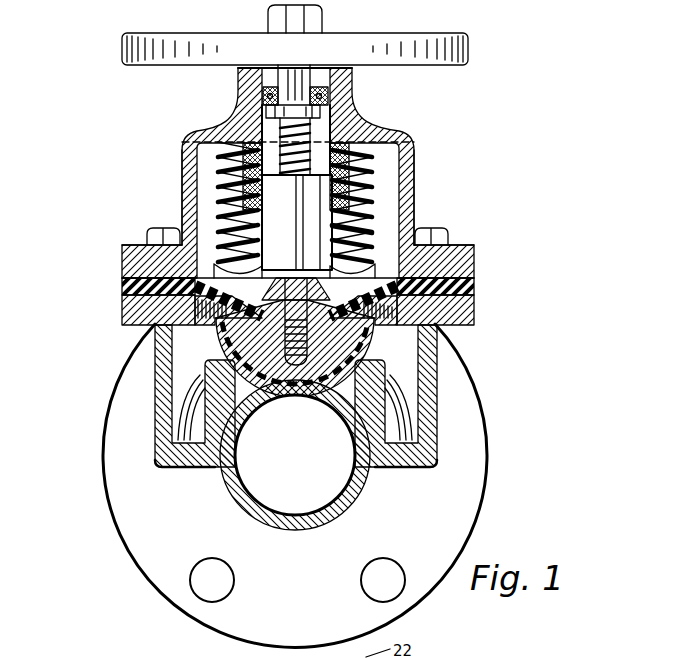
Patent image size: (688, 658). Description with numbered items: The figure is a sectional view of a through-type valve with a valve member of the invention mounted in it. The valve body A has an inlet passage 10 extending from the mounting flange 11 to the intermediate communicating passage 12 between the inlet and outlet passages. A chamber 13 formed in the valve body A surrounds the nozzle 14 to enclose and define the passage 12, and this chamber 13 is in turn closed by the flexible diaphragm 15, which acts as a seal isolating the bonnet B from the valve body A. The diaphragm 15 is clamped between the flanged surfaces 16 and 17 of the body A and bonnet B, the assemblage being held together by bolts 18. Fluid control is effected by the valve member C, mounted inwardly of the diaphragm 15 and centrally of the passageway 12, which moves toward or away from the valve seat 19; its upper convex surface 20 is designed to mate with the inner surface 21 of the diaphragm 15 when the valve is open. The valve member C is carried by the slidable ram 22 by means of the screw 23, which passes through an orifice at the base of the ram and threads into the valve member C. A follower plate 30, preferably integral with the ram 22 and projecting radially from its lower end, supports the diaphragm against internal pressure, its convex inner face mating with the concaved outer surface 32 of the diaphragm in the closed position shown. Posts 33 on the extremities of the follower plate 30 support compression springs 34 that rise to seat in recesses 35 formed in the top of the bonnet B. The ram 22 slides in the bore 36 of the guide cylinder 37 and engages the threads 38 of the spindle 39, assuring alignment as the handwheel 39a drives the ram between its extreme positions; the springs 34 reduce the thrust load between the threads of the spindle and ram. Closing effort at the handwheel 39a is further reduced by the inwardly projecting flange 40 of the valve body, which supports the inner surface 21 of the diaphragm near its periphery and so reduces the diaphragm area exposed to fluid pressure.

The inlet passage 10 is at (248, 468).
The mounting flange 11 is at (140, 533).
The intermediate communicating passage 12 is at (244, 398).
The chamber 13 is at (410, 375).
The nozzle 14 is at (220, 372).
The flexible diaphragm 15 is at (476, 287).
The flanged surface of body 16 is at (476, 313).
The flanged surface of bonnet 17 is at (476, 270).
The bolts 18 is at (160, 228).
The valve seat 19 is at (380, 372).
The upper convex surface 20 is at (232, 338).
The inner surface of diaphragm 21 is at (212, 325).
The slidable ram 22 is at (304, 202).
The screw 23 is at (297, 284).
The follower plate 30 is at (214, 284).
The concaved outer surface of diaphragm 32 is at (370, 284).
The posts 33 is at (355, 234).
The compression springs 34 is at (240, 178).
The recesses 35 is at (200, 122).
The bore 36 is at (262, 106).
The guide cylinder 37 is at (250, 163).
The threads 38 is at (332, 117).
The spindle 39 is at (350, 82).
The handwheel 39a is at (362, 42).
The inwardly projecting flange 40 is at (397, 312).
The valve body A is at (274, 485).
The bonnet B is at (420, 138).
The valve member C is at (380, 347).